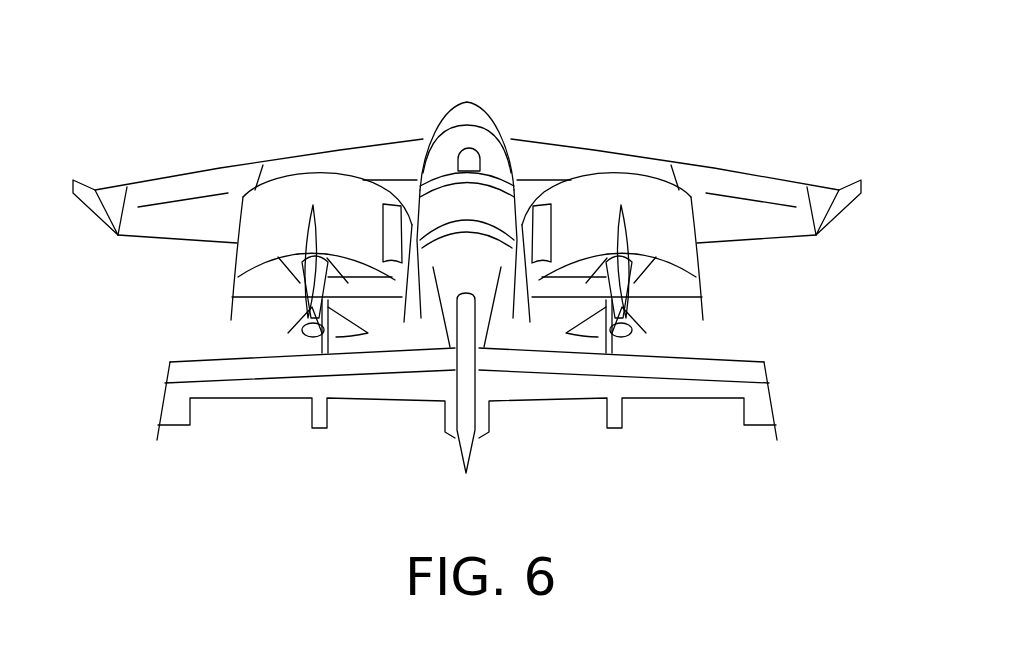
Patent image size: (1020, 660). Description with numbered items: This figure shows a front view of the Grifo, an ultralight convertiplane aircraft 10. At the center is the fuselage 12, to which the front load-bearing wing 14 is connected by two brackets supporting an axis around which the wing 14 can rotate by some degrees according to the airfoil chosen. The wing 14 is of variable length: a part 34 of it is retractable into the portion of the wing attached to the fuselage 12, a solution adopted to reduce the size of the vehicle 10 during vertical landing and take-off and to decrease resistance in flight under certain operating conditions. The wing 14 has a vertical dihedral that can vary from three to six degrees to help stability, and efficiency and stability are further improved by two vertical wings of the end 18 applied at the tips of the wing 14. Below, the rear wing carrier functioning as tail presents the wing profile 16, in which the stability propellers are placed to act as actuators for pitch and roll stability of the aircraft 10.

The ultralight aircraft 10 is at (745, 80).
The fuselage 12 is at (482, 109).
The front load-bearing wing 14 is at (202, 170).
The wing profile 16 is at (238, 402).
The vertical wings of the end 18 is at (843, 247).
The retractable wing part 34 is at (138, 188).